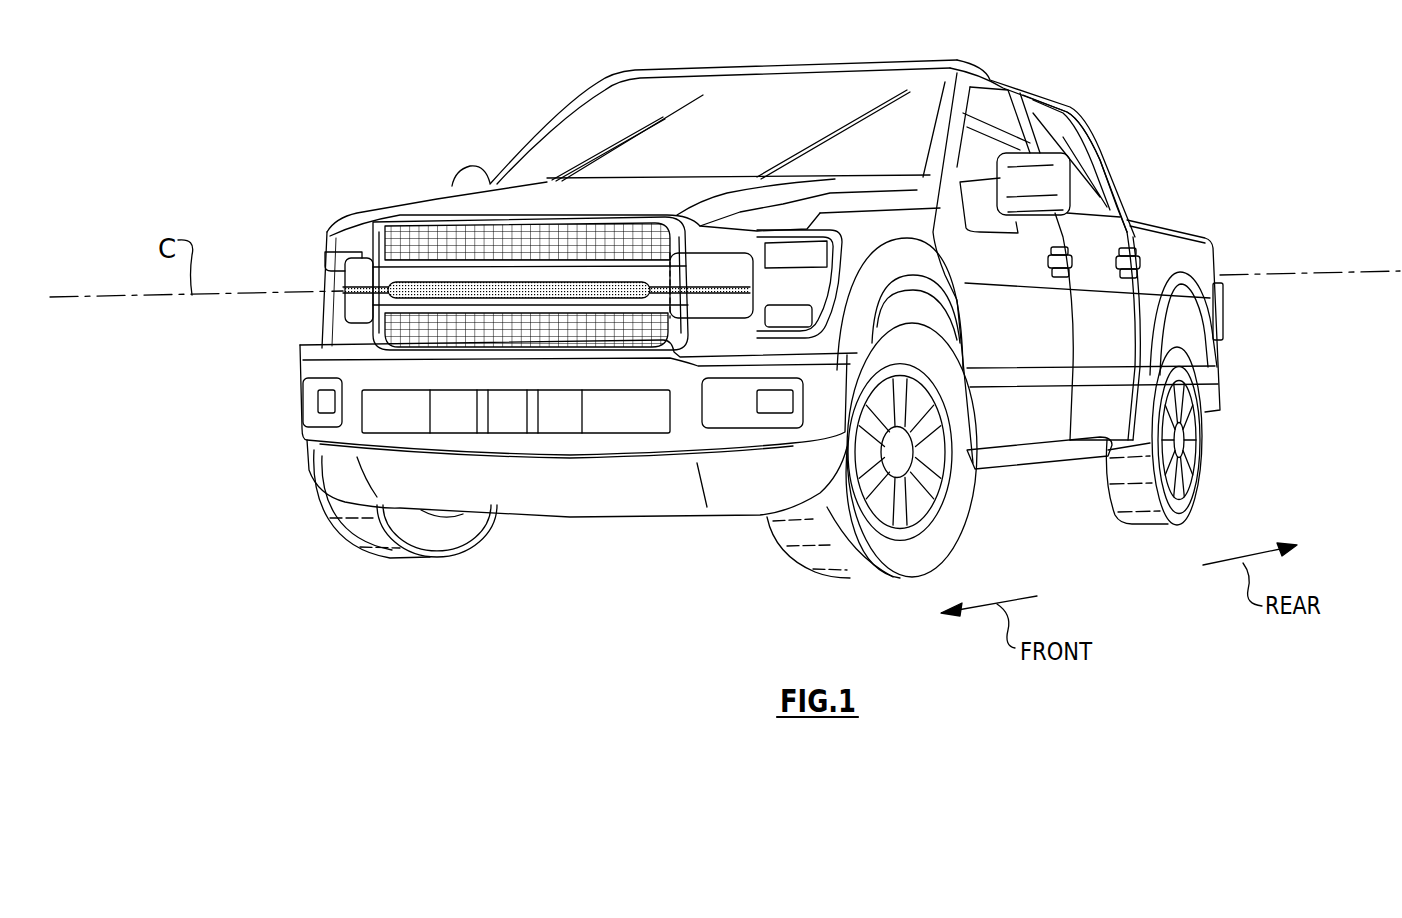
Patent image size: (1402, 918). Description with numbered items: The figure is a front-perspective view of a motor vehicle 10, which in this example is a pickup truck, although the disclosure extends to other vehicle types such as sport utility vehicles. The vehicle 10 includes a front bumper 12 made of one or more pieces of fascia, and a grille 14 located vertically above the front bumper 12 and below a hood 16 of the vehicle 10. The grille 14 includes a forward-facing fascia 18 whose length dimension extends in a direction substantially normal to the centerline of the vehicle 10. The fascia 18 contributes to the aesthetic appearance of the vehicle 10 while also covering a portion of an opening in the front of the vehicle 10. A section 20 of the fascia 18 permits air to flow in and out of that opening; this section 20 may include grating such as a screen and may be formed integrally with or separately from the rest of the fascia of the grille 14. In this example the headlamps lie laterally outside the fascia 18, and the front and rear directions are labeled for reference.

The motor vehicle 10 is at (452, 98).
The front bumper 12 is at (334, 428).
The grille 14 is at (345, 313).
The hood 16 is at (446, 210).
The forward-facing fascia 18 is at (706, 303).
The section 20 is at (587, 328).